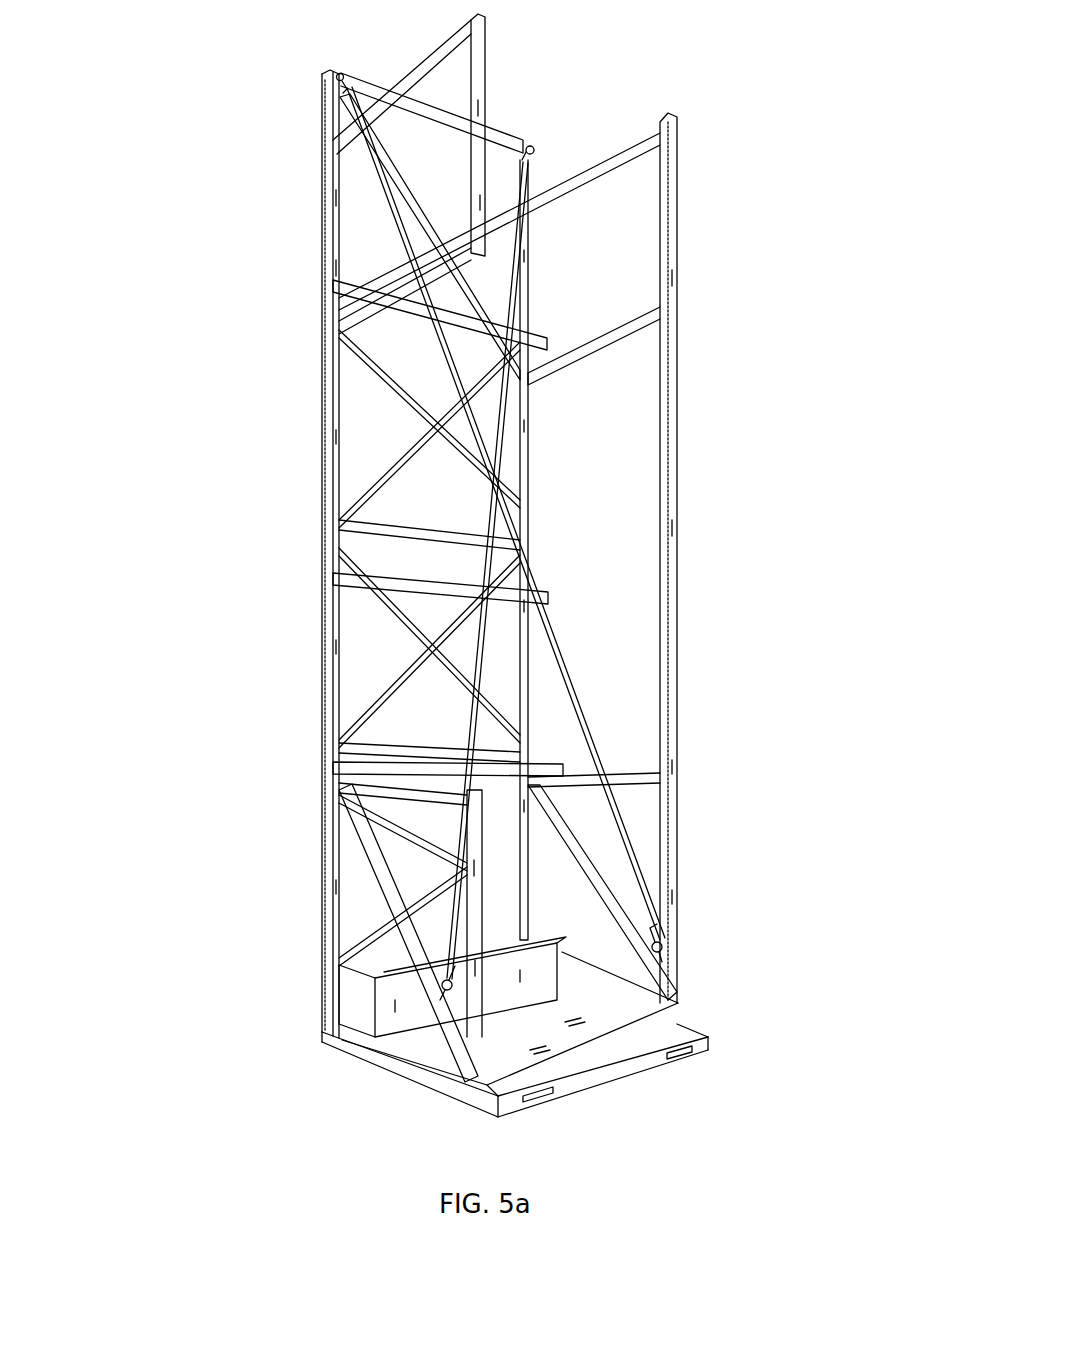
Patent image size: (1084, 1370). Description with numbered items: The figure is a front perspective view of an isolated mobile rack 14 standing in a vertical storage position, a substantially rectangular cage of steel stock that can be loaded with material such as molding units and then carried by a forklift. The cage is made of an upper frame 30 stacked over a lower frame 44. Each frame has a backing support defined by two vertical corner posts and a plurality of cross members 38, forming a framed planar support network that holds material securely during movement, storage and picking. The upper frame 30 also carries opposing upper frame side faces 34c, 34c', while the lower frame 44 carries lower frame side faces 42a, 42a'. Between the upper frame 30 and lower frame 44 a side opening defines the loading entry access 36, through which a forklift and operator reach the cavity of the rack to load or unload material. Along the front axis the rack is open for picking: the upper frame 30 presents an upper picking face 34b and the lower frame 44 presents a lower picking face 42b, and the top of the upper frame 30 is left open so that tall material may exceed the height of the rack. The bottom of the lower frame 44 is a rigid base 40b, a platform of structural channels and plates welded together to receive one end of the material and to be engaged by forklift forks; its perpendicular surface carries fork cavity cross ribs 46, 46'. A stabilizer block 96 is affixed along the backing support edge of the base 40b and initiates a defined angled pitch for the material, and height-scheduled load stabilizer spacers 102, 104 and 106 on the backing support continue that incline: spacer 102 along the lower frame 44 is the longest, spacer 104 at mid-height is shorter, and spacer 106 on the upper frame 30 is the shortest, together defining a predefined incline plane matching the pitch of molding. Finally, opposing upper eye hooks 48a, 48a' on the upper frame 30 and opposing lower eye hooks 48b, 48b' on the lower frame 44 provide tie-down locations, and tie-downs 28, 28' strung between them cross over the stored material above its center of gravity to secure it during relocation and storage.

The mobile rack 14 is at (203, 348).
The tie-down 28 is at (397, 570).
The tie-down 28' is at (541, 513).
The upper frame 30 is at (600, 235).
The upper picking face 34b is at (450, 297).
The upper frame side face 34c is at (293, 554).
The upper frame side face 34c' is at (688, 558).
The loading entry access 36 is at (373, 663).
The cross members 38 is at (403, 406).
The rigid base 40b is at (583, 1062).
The lower frame side face 42a is at (352, 910).
The lower frame side face 42a' is at (687, 877).
The lower picking face 42b is at (555, 928).
The lower frame 44 is at (482, 862).
The fork cavity cross ribs 46 is at (575, 1122).
The fork cavity cross ribs 46' is at (731, 1075).
The upper eye hook 48a is at (292, 49).
The upper eye hook 48a' is at (546, 125).
The lower eye hook 48b is at (379, 1025).
The lower eye hook 48b' is at (727, 956).
The stabilizer block 96 is at (347, 1008).
The load stabilizer spacer 102 is at (338, 771).
The load stabilizer spacer 104 is at (340, 582).
The load stabilizer spacer 106 is at (337, 287).